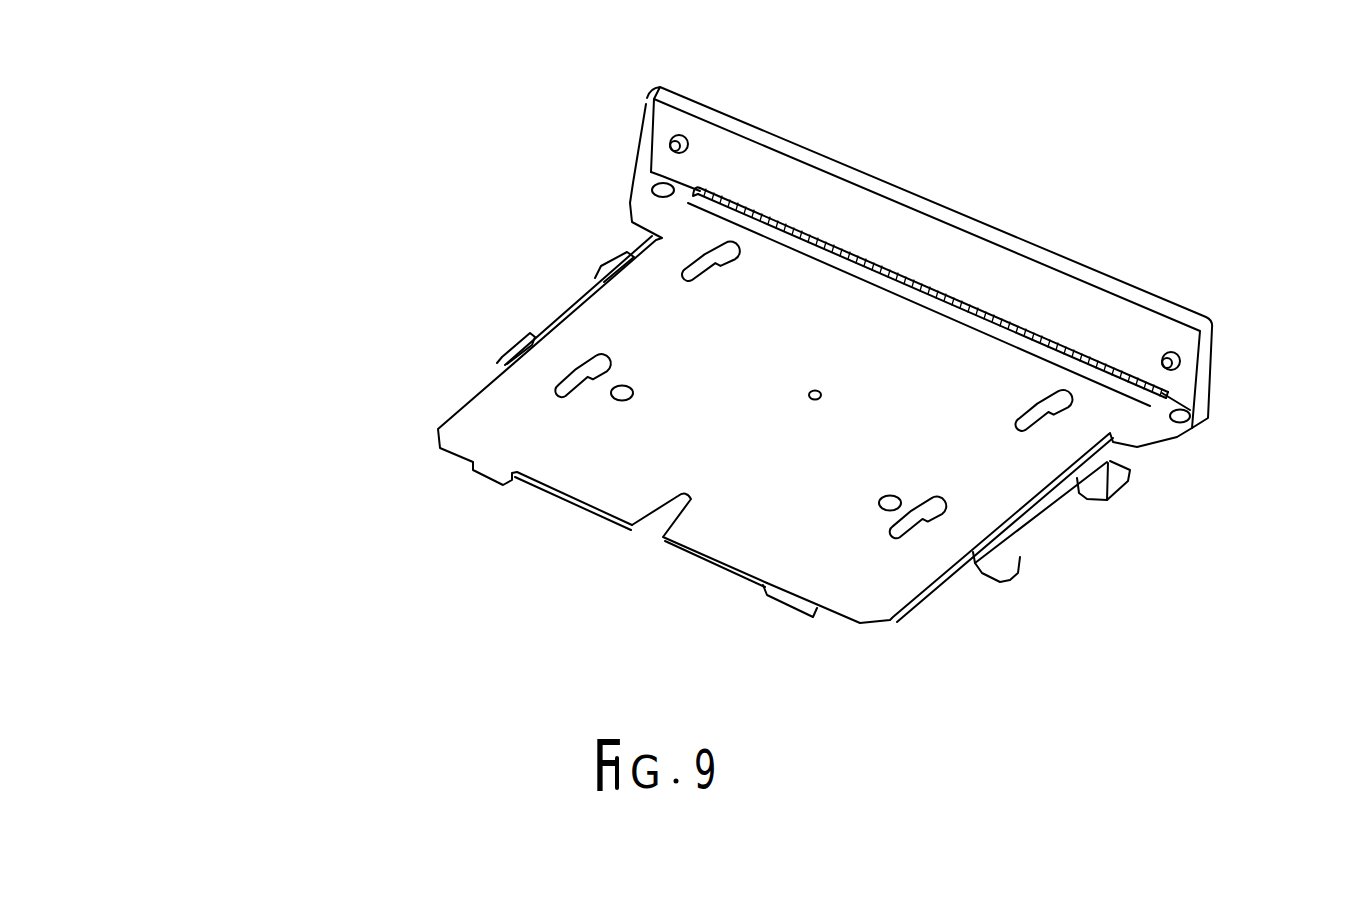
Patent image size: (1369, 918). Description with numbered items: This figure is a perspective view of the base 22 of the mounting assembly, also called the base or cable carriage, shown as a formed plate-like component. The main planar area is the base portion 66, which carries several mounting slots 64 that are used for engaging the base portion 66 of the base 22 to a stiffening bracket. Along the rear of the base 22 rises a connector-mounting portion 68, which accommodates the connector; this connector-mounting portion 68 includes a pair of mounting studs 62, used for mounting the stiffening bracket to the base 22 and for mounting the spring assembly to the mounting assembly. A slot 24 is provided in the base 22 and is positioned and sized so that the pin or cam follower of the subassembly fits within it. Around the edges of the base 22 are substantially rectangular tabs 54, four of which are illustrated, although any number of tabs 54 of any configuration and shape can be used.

The base 22 is at (340, 628).
The slot 24 is at (656, 521).
The tabs 54 is at (603, 267).
The mounting studs 62 is at (688, 140).
The mounting slots 64 is at (705, 286).
The base portion 66 is at (805, 469).
The connector-mounting portion 68 is at (940, 259).